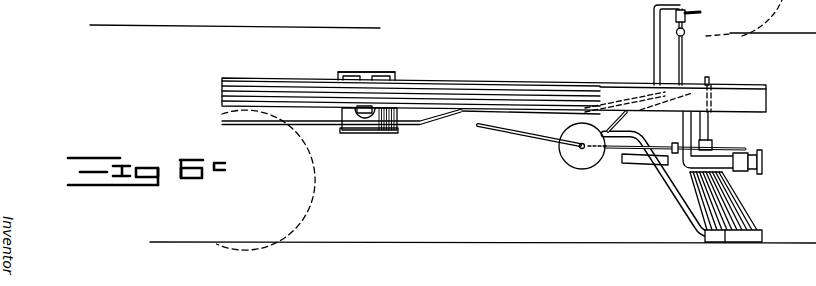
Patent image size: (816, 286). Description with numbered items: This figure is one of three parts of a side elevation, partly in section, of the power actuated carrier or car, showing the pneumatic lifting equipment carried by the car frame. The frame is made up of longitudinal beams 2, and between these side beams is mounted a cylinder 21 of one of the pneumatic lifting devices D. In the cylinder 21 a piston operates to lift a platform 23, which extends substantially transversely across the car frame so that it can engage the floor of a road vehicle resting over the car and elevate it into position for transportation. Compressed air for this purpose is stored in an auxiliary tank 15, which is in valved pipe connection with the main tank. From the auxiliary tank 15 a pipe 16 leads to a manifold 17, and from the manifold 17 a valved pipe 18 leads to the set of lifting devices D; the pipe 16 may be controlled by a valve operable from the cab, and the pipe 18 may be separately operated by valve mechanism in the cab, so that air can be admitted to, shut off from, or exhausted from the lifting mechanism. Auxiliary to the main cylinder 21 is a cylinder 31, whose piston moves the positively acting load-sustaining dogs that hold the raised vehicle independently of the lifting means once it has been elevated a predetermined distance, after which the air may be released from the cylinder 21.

The longitudinal beam 2 is at (262, 79).
The platform 23 is at (356, 78).
The pneumatic lifting device D is at (375, 67).
The valved pipe 18 is at (562, 112).
The auxiliary cylinder 31 is at (362, 118).
The cylinder 21 is at (371, 122).
The auxiliary tank 15 is at (567, 156).
The manifold 17 is at (685, 32).
The pipe 16 is at (684, 62).